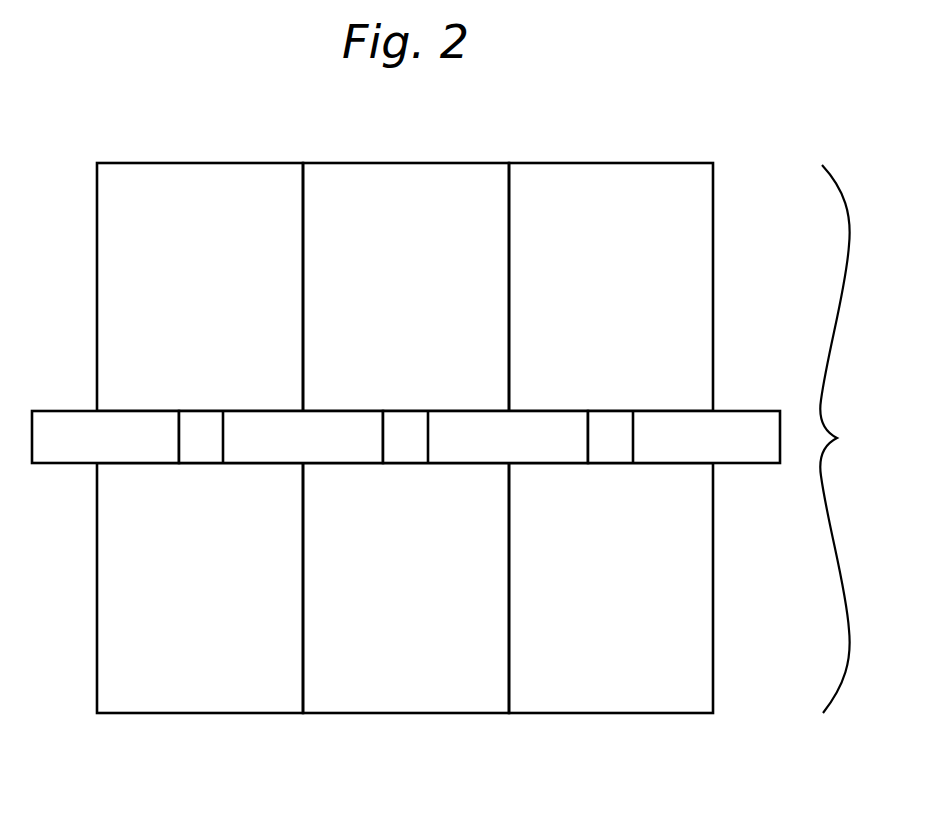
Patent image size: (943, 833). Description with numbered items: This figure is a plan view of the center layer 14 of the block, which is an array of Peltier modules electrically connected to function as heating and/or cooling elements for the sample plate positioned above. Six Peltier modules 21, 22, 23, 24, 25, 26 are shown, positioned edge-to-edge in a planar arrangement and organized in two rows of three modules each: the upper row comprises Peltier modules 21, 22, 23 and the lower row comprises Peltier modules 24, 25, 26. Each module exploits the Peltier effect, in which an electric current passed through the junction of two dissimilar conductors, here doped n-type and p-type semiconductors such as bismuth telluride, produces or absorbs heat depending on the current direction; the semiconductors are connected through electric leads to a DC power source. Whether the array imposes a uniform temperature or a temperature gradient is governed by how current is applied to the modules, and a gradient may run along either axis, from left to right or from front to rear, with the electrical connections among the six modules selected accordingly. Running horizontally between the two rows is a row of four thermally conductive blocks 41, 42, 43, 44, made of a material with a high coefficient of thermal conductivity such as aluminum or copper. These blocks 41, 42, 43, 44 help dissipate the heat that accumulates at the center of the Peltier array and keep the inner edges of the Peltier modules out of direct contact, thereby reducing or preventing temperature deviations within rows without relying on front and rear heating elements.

The center layer 14 is at (852, 439).
The Peltier module 21 is at (180, 178).
The Peltier module 22 is at (393, 178).
The Peltier module 23 is at (634, 172).
The Peltier module 24 is at (180, 698).
The Peltier module 25 is at (397, 700).
The Peltier module 26 is at (633, 700).
The thermally conductive block 41 is at (82, 452).
The thermally conductive block 42 is at (276, 451).
The thermally conductive block 43 is at (533, 452).
The thermally conductive block 44 is at (738, 451).